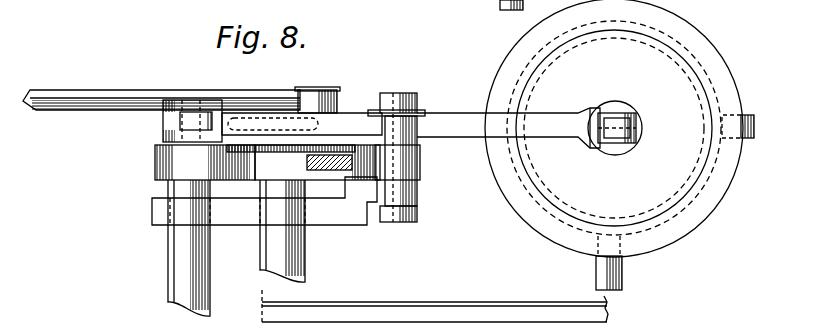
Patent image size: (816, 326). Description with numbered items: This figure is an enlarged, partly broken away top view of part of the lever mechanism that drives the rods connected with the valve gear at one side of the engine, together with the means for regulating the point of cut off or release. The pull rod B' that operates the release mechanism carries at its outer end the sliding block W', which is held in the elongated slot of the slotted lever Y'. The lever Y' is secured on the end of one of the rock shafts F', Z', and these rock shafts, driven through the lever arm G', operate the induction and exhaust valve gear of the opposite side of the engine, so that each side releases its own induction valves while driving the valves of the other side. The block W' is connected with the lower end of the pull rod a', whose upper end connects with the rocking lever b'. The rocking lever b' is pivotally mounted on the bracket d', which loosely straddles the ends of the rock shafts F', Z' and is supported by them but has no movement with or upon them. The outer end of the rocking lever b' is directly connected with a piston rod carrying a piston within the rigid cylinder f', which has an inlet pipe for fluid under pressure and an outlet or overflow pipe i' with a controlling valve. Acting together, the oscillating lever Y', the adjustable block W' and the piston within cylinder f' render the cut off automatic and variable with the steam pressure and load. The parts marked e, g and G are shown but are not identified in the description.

The pull rod B' is at (161, 111).
The pull rod a' is at (272, 103).
The sliding block W' is at (384, 146).
The rocking lever b' is at (508, 116).
The rigid cylinder f' is at (614, 128).
The crank pin hub e is at (605, 128).
The wheel pin g is at (738, 145).
The outlet or overflow pipe i' is at (616, 263).
The slotted lever Y' is at (255, 172).
The lever arm G' is at (317, 172).
The bracket d' is at (264, 218).
The rock shaft F' is at (172, 248).
The rock shaft Z' is at (269, 231).
The rail G is at (435, 306).